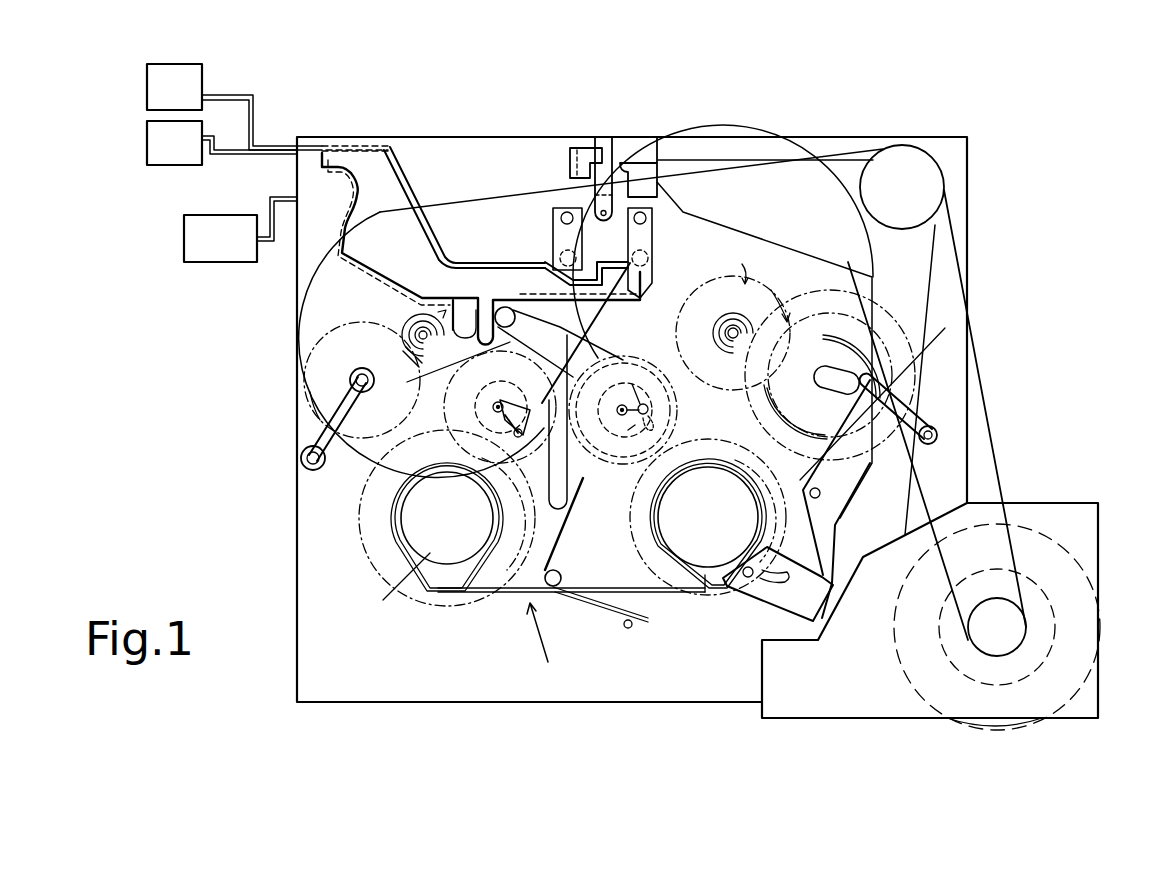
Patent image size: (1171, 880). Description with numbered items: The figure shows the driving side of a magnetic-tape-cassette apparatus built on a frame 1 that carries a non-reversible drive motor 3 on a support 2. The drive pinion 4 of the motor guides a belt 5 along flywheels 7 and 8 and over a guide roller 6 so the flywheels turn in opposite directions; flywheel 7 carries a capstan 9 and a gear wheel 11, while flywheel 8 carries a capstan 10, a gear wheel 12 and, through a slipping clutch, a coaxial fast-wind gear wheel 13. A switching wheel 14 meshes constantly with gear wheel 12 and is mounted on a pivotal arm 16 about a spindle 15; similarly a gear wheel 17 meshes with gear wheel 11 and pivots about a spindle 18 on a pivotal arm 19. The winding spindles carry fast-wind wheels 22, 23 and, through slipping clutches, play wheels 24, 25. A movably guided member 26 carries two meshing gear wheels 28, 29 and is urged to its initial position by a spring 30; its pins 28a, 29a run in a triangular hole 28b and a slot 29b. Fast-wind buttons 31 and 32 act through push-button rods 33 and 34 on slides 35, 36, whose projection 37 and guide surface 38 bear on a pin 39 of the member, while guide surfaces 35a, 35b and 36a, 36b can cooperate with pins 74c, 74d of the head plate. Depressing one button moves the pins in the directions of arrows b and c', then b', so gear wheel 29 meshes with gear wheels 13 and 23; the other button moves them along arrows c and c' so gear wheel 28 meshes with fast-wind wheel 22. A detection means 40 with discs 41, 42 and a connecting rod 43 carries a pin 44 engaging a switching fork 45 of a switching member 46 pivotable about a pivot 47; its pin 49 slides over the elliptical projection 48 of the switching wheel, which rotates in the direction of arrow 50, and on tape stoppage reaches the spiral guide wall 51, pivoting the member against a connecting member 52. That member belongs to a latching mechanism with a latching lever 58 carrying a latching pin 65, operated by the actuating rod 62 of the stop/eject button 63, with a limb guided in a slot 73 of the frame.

The frame 1 is at (525, 690).
The support 2 is at (798, 710).
The drive motor 3 is at (976, 728).
The drive pinion 4 is at (1010, 640).
The belt 5 is at (1000, 466).
The guide roller 6 is at (946, 188).
The flywheel 7 is at (308, 300).
The flywheel 8 is at (783, 222).
The capstan 9 is at (418, 333).
The capstan 10 is at (728, 333).
The gear wheel 11 is at (420, 318).
The gear wheel 12 is at (705, 292).
The gear wheel 13 is at (745, 264).
The switching wheel 14 is at (918, 388).
The spindle 15 is at (931, 445).
The pivotal arm 16 is at (912, 412).
The gear wheel 17 is at (314, 403).
The spindle 18 is at (302, 466).
The pivotal arm 19 is at (318, 440).
The fast-wind wheel 22 is at (392, 533).
The fast-wind wheel 23 is at (652, 505).
The play wheel 24 is at (372, 563).
The play wheel 25 is at (630, 540).
The member 26 is at (590, 343).
The gear wheel 28 is at (432, 400).
The pin 28a is at (497, 400).
The triangular hole 28b is at (514, 436).
The gear wheel 29 is at (668, 413).
The pin 29a is at (617, 410).
The slot 29b is at (664, 390).
The spring 30 is at (598, 604).
The button 31 is at (150, 84).
The button 32 is at (150, 136).
The push-button rod 33 is at (240, 95).
The push-button rod 34 is at (236, 152).
The slide 35 is at (352, 190).
The guide surface 35a is at (545, 272).
The guide surface 35b is at (581, 333).
The slide 36 is at (422, 188).
The guide surface 36a is at (565, 250).
The guide surface 36b is at (648, 258).
The projection 37 is at (407, 382).
The guide surface 38 is at (408, 358).
The pin 39 is at (515, 307).
The detection means 40 is at (542, 645).
The disc 41 is at (393, 585).
The disc 42 is at (708, 590).
The connecting rod 43 is at (520, 596).
The pin 44 is at (746, 567).
The switching fork 45 is at (785, 603).
The switching member 46 is at (845, 480).
The pivot 47 is at (821, 497).
The projection 48 is at (830, 364).
The pin 49 is at (880, 362).
The arrow 50 is at (786, 300).
The spiral guide wall 51 is at (805, 430).
The connecting member 52 is at (838, 170).
The latching lever 58 is at (645, 148).
The actuating rod 62 is at (274, 250).
The stop/eject button 63 is at (214, 253).
The latching pin 65 is at (603, 217).
The slot 73 is at (568, 150).
The pin 74c is at (566, 212).
The pin 74d is at (646, 216).
The arrow b is at (515, 401).
The arrow c is at (488, 416).
The arrow c' is at (638, 389).
The arrow b' is at (635, 436).